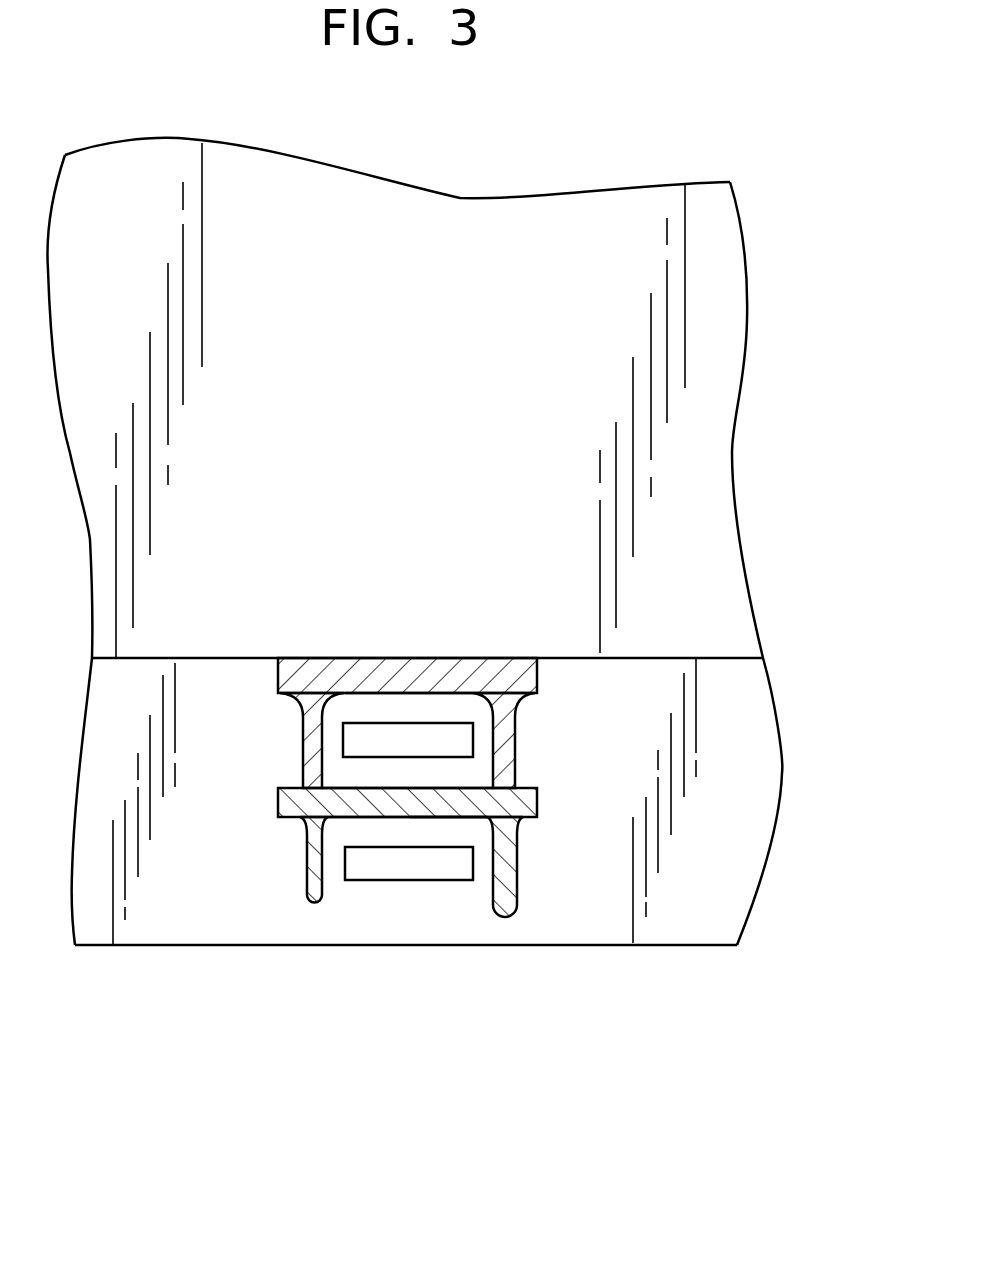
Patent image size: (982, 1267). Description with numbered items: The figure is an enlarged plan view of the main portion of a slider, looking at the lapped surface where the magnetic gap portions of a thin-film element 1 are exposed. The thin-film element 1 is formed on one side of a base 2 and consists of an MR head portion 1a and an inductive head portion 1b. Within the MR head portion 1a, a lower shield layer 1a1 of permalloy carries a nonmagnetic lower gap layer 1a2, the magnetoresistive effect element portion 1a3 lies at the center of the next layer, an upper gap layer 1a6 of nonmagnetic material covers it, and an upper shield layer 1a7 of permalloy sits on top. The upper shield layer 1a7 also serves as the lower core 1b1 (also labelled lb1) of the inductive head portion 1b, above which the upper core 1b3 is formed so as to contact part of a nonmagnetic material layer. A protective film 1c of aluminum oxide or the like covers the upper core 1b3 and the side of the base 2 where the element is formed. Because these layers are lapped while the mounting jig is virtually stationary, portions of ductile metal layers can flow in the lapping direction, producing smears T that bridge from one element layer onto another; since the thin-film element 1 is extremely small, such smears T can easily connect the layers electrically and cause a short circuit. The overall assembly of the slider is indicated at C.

The connector C is at (758, 317).
The thin-film element 1 is at (727, 830).
The MR head portion 1a is at (253, 590).
The lower shield layer 1a1 is at (492, 675).
The lower gap layer 1a2 is at (442, 713).
The magnetoresistive effect element portion 1a3 is at (397, 737).
The upper gap layer 1a6 is at (369, 778).
The upper shield layer 1a7 is at (336, 808).
The inductive head portion 1b is at (300, 1017).
The lower core 1b1 is at (398, 835).
The lower core lb1 is at (445, 800).
The upper core 1b3 is at (365, 867).
The protective film 1c is at (179, 928).
The base 2 is at (697, 490).
The smear T is at (312, 748).